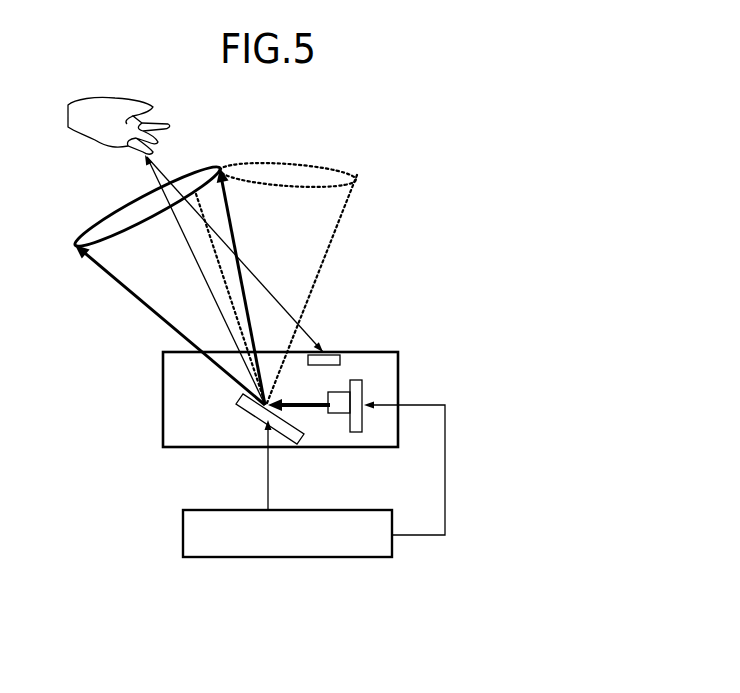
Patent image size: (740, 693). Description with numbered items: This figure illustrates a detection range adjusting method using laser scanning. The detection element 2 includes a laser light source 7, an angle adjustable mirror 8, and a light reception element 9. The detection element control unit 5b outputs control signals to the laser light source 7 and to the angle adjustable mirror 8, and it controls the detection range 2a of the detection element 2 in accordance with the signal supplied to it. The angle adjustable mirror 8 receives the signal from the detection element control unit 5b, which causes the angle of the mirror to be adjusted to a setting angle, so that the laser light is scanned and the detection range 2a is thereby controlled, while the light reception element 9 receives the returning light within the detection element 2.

The detection element 2 is at (162, 412).
The detection range 2a is at (138, 220).
The laser light source 7 is at (363, 380).
The angle adjustable mirror 8 is at (305, 438).
The light reception element 9 is at (335, 352).
The detection element control unit 5b is at (397, 555).